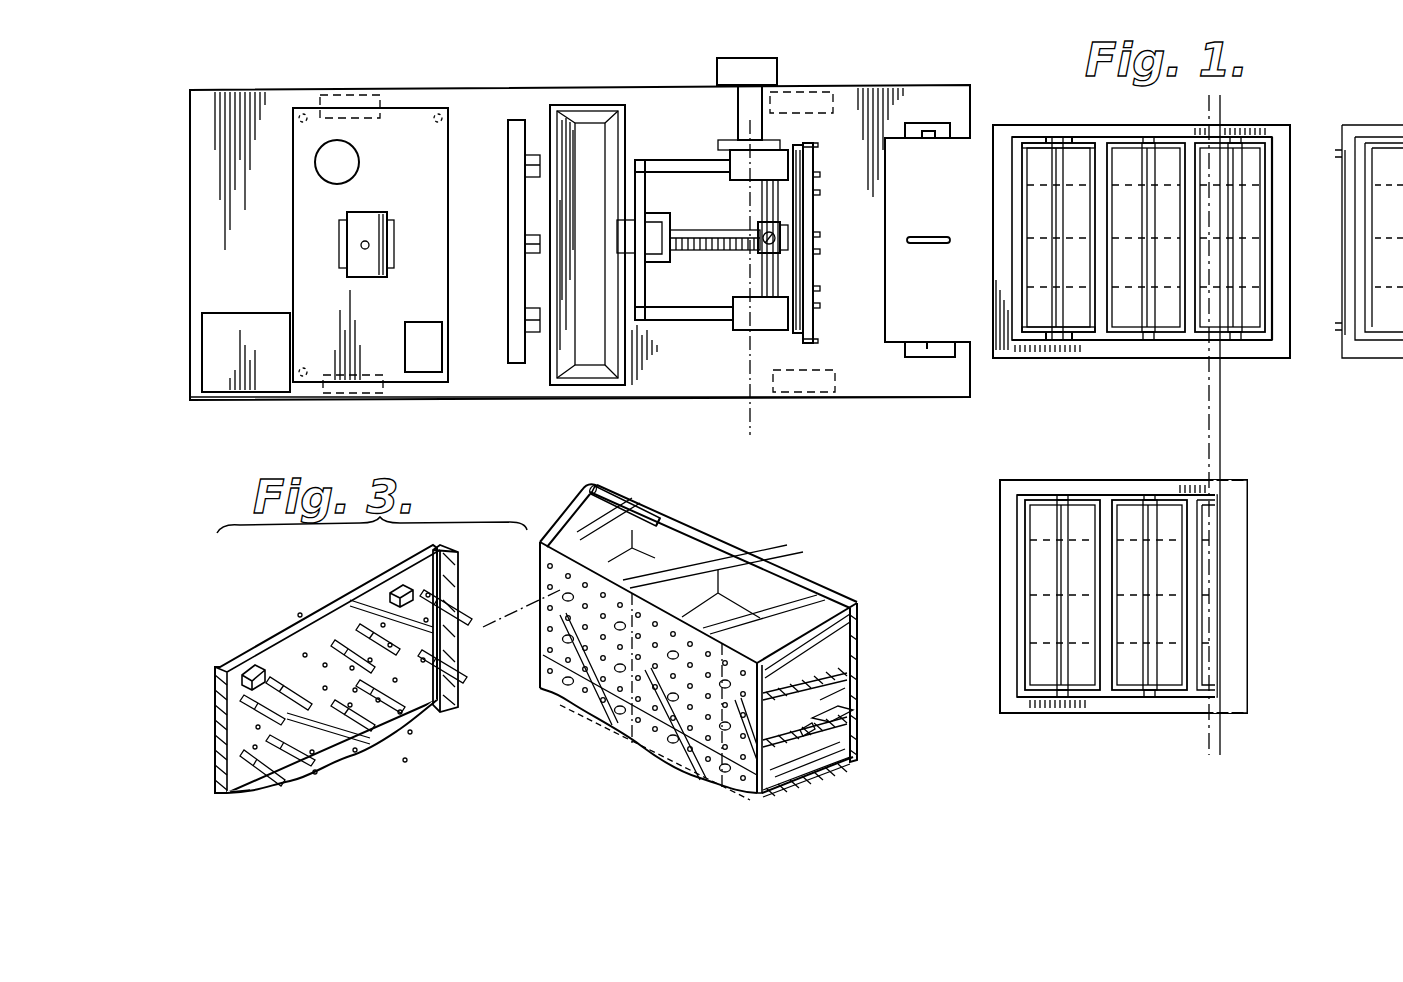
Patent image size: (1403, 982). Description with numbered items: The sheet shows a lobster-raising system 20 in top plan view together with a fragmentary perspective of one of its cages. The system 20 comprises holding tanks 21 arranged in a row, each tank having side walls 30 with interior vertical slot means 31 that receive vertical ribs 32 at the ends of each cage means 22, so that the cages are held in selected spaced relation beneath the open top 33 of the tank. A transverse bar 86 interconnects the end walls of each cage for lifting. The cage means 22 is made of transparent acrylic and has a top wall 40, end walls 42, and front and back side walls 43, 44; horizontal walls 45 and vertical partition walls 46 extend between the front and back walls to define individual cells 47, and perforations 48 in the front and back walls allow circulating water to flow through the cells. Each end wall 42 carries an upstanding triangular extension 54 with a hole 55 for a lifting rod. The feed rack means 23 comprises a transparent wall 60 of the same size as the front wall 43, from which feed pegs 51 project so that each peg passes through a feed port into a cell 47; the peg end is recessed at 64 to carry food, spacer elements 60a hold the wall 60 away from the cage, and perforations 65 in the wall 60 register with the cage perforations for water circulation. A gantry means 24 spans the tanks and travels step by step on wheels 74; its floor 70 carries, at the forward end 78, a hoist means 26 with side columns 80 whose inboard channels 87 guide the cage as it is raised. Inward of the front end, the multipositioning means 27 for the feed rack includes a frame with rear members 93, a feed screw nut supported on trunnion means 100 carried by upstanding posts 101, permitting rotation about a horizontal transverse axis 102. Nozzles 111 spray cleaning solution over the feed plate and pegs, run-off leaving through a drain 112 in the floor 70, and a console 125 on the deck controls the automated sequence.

In FIG. 1, the system 20 is at (594, 214).
In FIG. 1, the holding tank 21 is at (1347, 127).
In FIG. 1, the cage means 22 is at (1172, 312).
In FIG. 3, the cage means 22 is at (715, 621).
In FIG. 1, the feed rack means 23 is at (820, 160).
In FIG. 3, the feed rack means 23 is at (318, 586).
In FIG. 1, the gantry means 24 is at (285, 83).
In FIG. 1, the hoist means 26 is at (926, 121).
In FIG. 1, the multipositioning means 27 is at (688, 136).
In FIG. 1, the side wall 30 is at (1167, 132).
In FIG. 1, the vertical slot means 31 is at (1052, 138).
In FIG. 1, the vertical rib 32 is at (1058, 343).
In FIG. 1, the open top 33 is at (1276, 357).
In FIG. 3, the top wall 40 is at (828, 603).
In FIG. 1, the end wall 42 is at (1033, 146).
In FIG. 3, the front side wall 43 is at (563, 694).
In FIG. 3, the back side wall 44 is at (858, 637).
In FIG. 3, the horizontal wall 45 is at (855, 690).
In FIG. 3, the vertical partition wall 46 is at (796, 600).
In FIG. 3, the cage cell 47 is at (858, 740).
In FIG. 3, the perforation 48 is at (680, 771).
In FIG. 3, the feed peg 51 is at (440, 598).
In FIG. 3, the triangular extension 54 is at (585, 512).
In FIG. 3, the hole 55 is at (597, 489).
In FIG. 3, the wall 60 is at (333, 746).
In FIG. 3, the spacer element 60a is at (404, 585).
In FIG. 3, the longitudinal recess 64 is at (399, 713).
In FIG. 3, the perforation 65 is at (293, 647).
In FIG. 1, the floor 70 is at (856, 240).
In FIG. 1, the wheel 74 is at (357, 93).
In FIG. 1, the forward end 78 is at (924, 388).
In FIG. 1, the side column 80 is at (930, 357).
In FIG. 1, the transverse bar 86 is at (1242, 228).
In FIG. 3, the transverse bar 86 is at (640, 511).
In FIG. 1, the vertical channel 87 is at (928, 340).
In FIG. 1, the vertical and horizontal members 93 is at (645, 192).
In FIG. 1, the trunnion means 100 is at (745, 112).
In FIG. 1, the upstanding post 101 is at (760, 70).
In FIG. 1, the horizontal transverse axis 102 is at (748, 366).
In FIG. 1, the nozzle 111 is at (535, 240).
In FIG. 1, the drain 112 is at (578, 104).
In FIG. 1, the console 125 is at (268, 312).